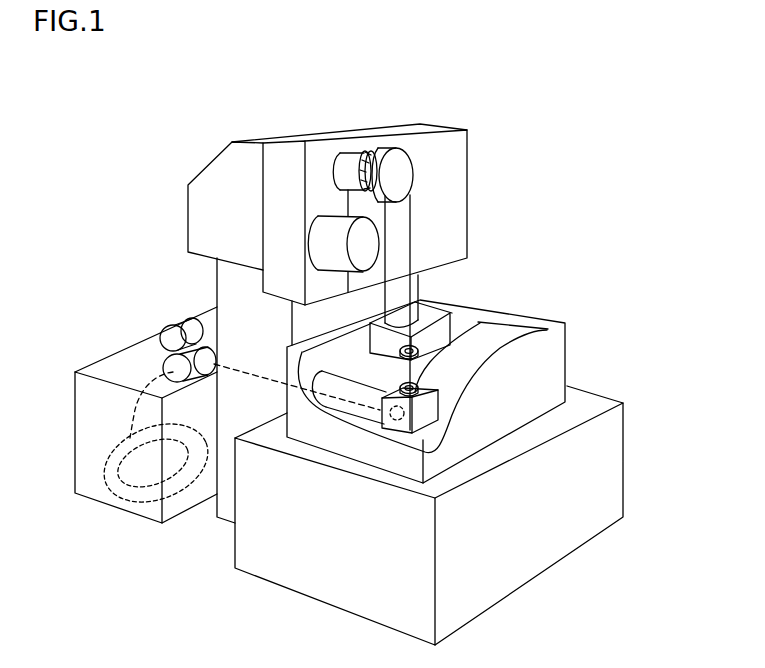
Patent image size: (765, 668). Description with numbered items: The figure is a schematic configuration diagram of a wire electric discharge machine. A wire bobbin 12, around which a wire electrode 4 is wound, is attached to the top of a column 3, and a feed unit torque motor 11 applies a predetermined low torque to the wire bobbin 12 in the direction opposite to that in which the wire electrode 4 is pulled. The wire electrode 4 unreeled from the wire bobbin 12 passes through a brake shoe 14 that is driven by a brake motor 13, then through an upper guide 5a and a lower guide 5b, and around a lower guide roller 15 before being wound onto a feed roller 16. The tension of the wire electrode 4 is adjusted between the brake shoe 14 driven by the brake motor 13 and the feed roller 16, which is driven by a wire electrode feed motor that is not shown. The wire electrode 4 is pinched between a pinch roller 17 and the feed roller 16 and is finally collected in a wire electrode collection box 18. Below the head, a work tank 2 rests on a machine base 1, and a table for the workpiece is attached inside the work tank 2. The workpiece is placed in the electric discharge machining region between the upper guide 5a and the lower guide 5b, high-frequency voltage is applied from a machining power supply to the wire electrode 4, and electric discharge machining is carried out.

The machine base 1 is at (262, 567).
The work tank 2 is at (556, 362).
The column 3 is at (216, 287).
The wire electrode 4 is at (410, 227).
The upper guide 5a is at (428, 338).
The lower guide 5b is at (481, 333).
The feed unit torque motor 11 is at (320, 222).
The wire bobbin 12 is at (323, 215).
The brake motor 13 is at (357, 157).
The brake shoe 14 is at (403, 158).
The lower guide roller 15 is at (385, 428).
The feed roller 16 is at (176, 369).
The pinch roller 17 is at (171, 332).
The wire electrode collection box 18 is at (83, 432).